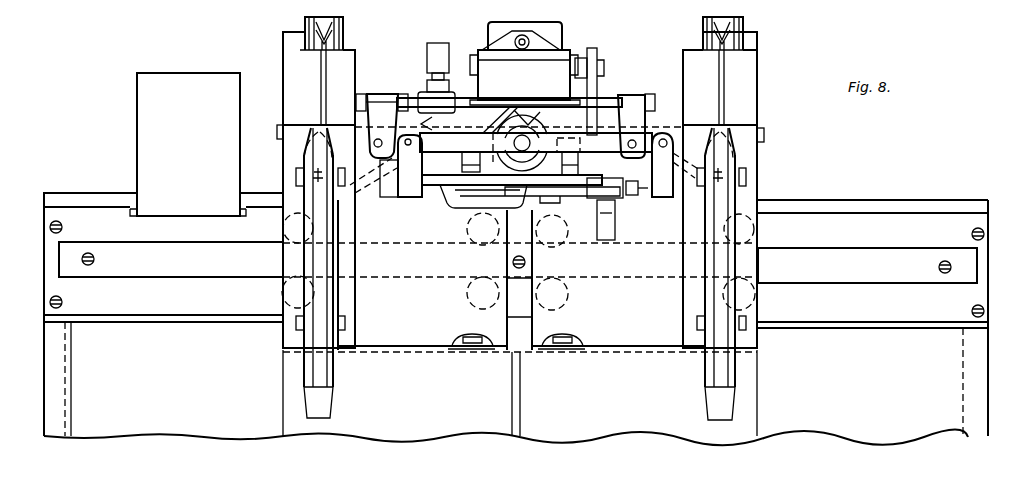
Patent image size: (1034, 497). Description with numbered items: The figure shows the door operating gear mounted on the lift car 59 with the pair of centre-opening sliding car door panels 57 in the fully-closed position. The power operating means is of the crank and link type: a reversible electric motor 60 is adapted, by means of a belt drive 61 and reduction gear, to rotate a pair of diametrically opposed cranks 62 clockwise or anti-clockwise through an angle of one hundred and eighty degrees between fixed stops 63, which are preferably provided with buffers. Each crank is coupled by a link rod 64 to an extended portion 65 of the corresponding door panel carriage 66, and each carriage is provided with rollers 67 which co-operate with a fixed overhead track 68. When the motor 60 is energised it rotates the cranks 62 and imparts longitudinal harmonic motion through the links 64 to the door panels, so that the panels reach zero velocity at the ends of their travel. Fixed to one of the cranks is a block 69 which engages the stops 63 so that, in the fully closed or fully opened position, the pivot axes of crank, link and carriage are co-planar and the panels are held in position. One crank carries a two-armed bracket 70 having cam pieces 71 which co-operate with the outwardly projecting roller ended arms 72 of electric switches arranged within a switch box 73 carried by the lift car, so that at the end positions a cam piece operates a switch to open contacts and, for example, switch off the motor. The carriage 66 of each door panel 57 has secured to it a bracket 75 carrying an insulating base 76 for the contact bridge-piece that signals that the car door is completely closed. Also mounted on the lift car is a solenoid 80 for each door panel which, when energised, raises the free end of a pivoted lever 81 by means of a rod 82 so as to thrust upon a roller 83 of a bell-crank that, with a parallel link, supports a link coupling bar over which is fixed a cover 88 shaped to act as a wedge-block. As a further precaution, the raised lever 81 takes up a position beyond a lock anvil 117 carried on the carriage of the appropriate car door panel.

The car door panel 57 is at (287, 408).
The lift car 59 is at (48, 372).
The reversible electric motor 60 is at (492, 20).
The belt drive 61 is at (598, 52).
The crank 62 is at (536, 142).
The fixed stop 63 is at (463, 165).
The link rod 64 is at (527, 100).
The extended portion of the door panel carriage 65 is at (656, 115).
The door panel carriage 66 is at (395, 340).
The roller 67 is at (330, 290).
The fixed overhead track 68 is at (175, 270).
The block 69 is at (533, 156).
The two-armed bracket 70 is at (492, 143).
The cam piece 71 is at (478, 128).
The roller ended arm 72 is at (480, 106).
The switch box 73 is at (600, 74).
The bracket 75 is at (392, 166).
The insulating base 76 is at (510, 200).
The solenoid 80 is at (290, 100).
The pivoted lever 81 is at (305, 180).
The rod 82 is at (322, 75).
The roller 83 is at (520, 147).
The wedge-block cover 88 is at (303, 258).
The lock anvil 117 is at (346, 190).